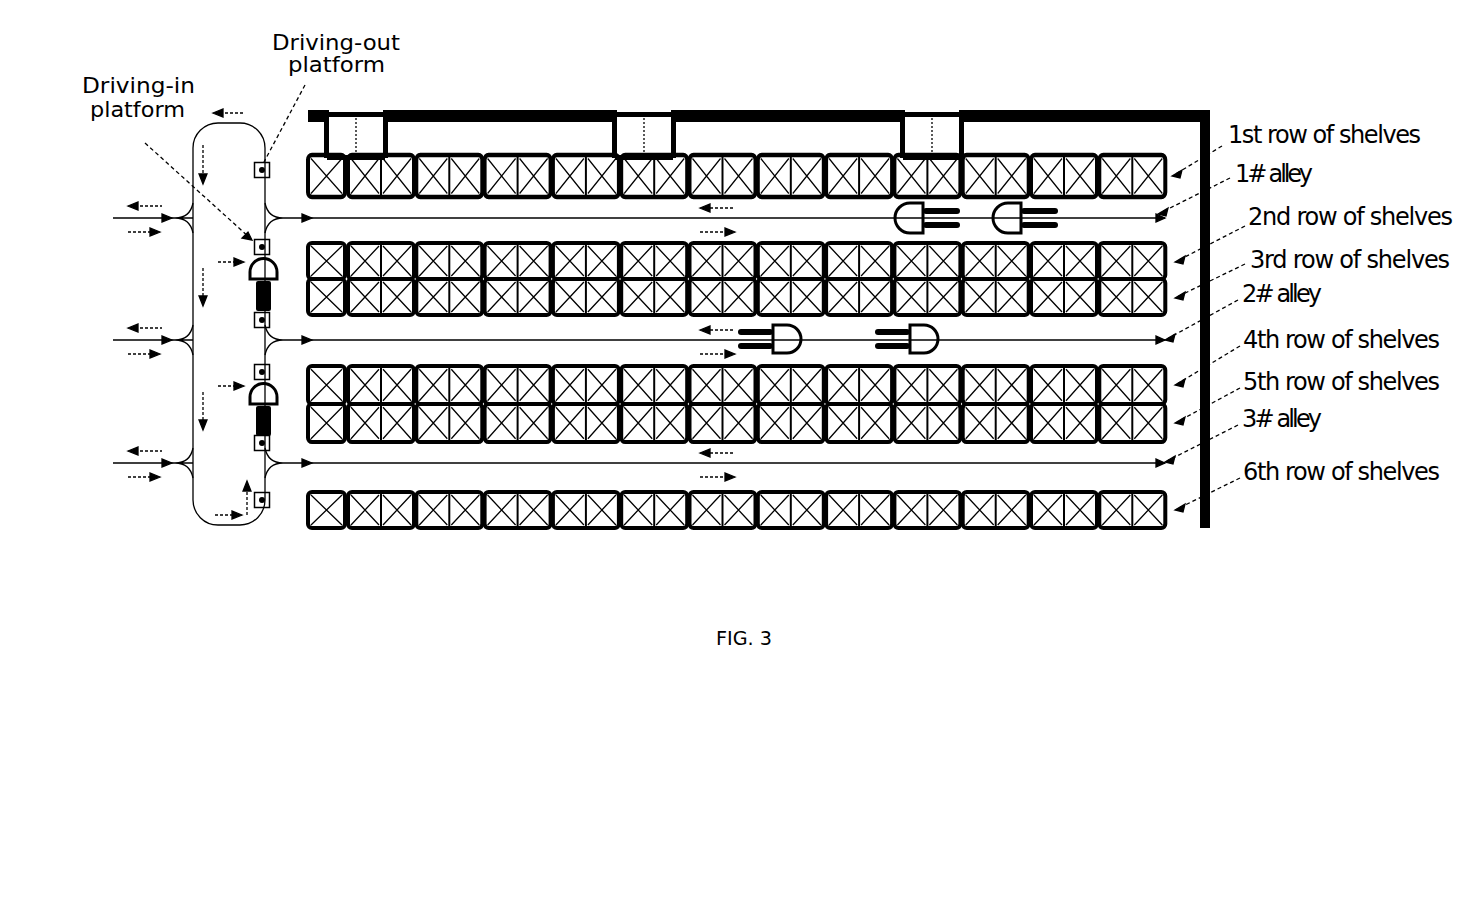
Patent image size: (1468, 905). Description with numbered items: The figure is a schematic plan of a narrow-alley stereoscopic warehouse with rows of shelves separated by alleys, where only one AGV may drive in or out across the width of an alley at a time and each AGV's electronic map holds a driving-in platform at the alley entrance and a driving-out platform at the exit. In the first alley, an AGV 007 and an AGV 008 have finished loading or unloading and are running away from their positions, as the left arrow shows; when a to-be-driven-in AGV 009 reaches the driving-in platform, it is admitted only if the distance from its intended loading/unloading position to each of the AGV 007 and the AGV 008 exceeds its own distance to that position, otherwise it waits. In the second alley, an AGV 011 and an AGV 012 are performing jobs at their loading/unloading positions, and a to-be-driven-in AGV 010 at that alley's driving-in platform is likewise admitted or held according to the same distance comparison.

The AGV 007 is at (995, 205).
The AGV 008 is at (900, 205).
The to-be-driven-in AGV 009 is at (248, 270).
The to-be-driven-in AGV 010 is at (248, 393).
The AGV 011 is at (757, 358).
The AGV 012 is at (897, 358).